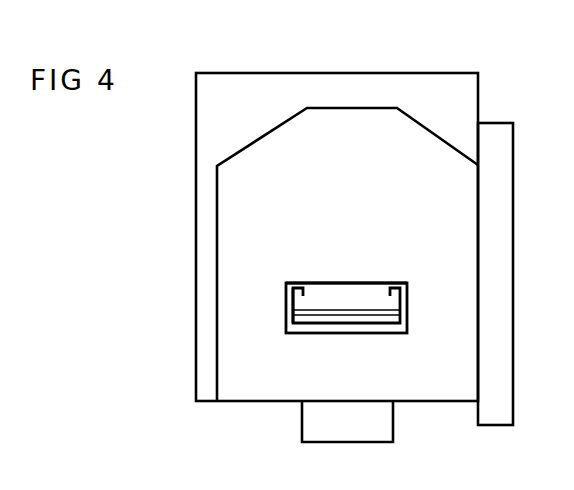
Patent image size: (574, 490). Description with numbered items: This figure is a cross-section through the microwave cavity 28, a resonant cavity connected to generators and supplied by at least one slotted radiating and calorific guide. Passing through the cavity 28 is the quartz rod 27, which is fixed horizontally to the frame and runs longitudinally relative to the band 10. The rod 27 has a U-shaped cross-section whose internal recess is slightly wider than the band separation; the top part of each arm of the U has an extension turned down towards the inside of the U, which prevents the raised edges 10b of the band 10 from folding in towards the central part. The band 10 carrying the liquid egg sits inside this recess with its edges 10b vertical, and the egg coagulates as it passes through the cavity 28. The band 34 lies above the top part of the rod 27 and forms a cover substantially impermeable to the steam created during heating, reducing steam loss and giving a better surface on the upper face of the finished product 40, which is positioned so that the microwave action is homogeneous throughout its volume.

The microwave cavity 28 is at (390, 130).
The quartz rod 27 is at (407, 329).
The band 10 is at (338, 323).
The edges of the band 10b is at (288, 311).
The finished product 40 is at (382, 314).
The band (cover band) 34 is at (320, 283).